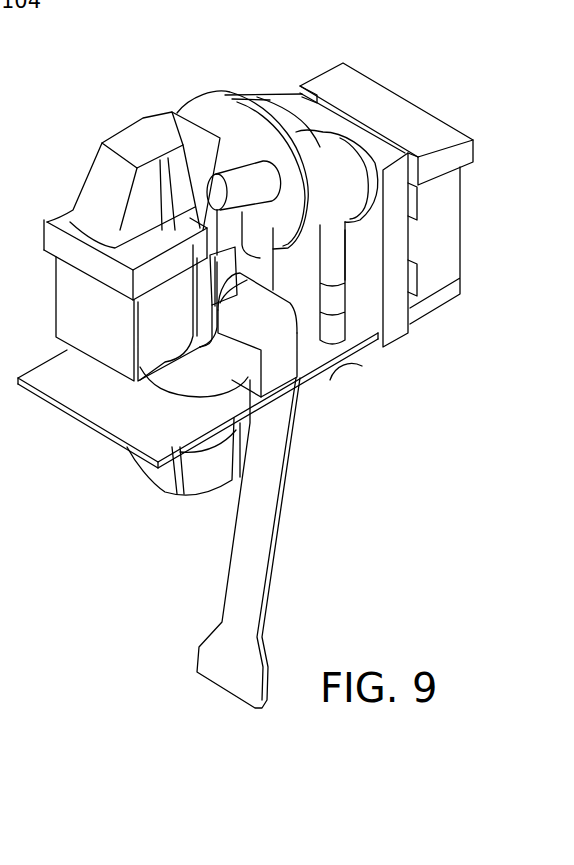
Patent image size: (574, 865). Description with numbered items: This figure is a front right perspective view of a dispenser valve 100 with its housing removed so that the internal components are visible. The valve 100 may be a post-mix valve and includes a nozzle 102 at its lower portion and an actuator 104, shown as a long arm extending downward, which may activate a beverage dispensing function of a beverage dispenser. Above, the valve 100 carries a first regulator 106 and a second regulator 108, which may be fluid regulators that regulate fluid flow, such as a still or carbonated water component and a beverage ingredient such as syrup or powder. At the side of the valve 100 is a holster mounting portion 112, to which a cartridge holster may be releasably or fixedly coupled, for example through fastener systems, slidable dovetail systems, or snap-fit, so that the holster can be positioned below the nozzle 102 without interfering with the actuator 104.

The valve 100 is at (161, 85).
The nozzle 102 is at (157, 487).
The actuator 104 is at (281, 527).
The first regulator 106 is at (264, 98).
The second regulator 108 is at (330, 157).
The holster mounting portion 112 is at (435, 318).